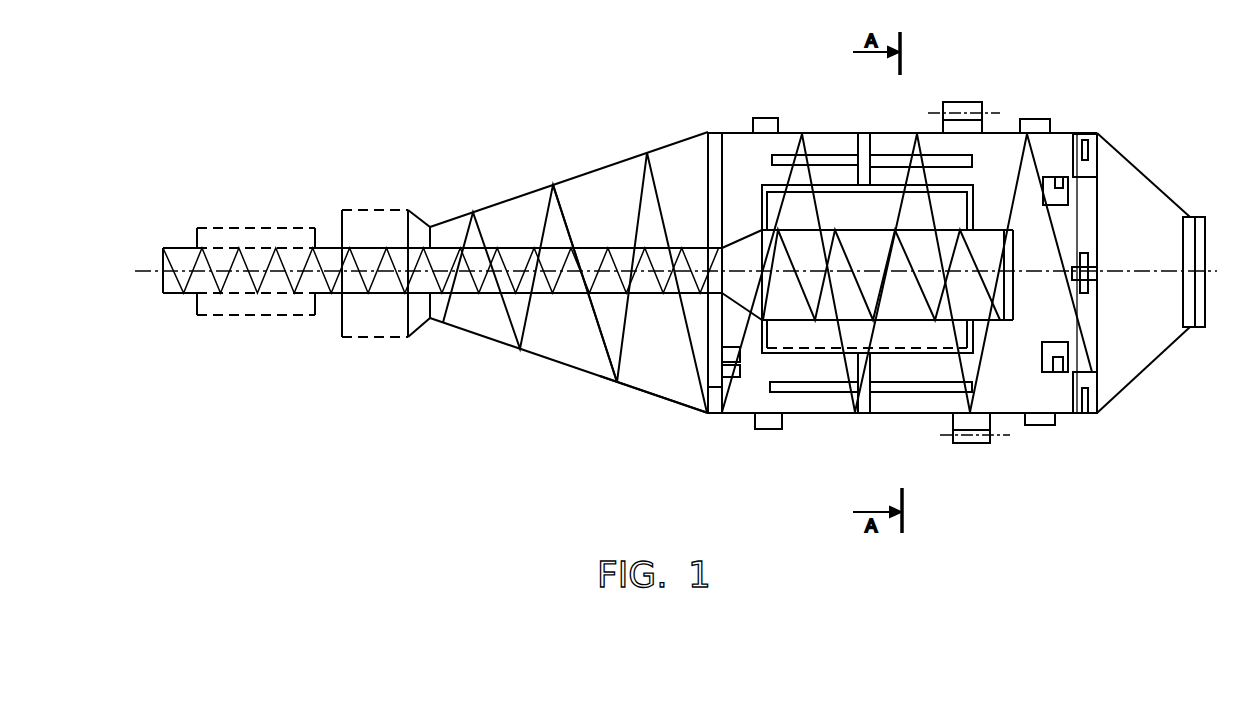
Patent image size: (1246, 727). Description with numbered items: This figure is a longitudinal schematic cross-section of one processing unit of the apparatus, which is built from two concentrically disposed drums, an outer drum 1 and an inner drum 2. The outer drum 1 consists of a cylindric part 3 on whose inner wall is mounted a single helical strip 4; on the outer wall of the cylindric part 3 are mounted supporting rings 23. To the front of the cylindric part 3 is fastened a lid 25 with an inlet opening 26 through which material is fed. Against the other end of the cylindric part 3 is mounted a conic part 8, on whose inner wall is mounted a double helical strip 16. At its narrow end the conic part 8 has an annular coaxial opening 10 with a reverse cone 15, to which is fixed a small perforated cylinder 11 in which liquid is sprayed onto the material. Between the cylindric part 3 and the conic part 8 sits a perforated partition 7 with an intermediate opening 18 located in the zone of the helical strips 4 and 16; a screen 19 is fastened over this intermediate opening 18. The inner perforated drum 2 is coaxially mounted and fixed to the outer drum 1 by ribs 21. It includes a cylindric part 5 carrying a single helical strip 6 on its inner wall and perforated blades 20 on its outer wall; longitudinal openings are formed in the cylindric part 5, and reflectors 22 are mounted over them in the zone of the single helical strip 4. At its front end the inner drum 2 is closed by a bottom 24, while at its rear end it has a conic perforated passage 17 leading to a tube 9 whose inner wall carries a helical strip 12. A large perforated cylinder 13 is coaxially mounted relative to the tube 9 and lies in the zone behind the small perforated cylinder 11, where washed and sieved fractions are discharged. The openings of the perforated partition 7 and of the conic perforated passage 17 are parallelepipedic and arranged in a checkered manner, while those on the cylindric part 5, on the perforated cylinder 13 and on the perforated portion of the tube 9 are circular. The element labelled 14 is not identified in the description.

The outer drum 1 is at (1097, 134).
The inner drum 2 is at (1015, 228).
The cylindric part 3 is at (1006, 133).
The single helical strip 4 is at (917, 134).
The cylindric part 5 is at (858, 237).
The single helical strip 6 is at (768, 195).
The perforated partition 7 is at (717, 177).
The conic part 8 is at (590, 172).
The tube 9 is at (510, 248).
The annular coaxial opening 10 is at (407, 208).
The small perforated cylinder 11 is at (375, 210).
The helical strip 12 is at (340, 245).
The large perforated cylinder 13 is at (232, 230).
The shaft end 14 is at (162, 293).
The reverse cone 15 is at (417, 318).
The double helical strip 16 is at (605, 353).
The conic perforated passage 17 is at (703, 397).
The intermediate opening 18 is at (722, 413).
The screen 19 is at (740, 373).
The perforated blades 20 is at (775, 353).
The ribs 21 is at (865, 402).
The reflectors 22 is at (943, 387).
The supporting rings 23 is at (1038, 425).
The bottom 24 is at (1017, 277).
The lid 25 is at (1147, 370).
The inlet opening 26 is at (1207, 315).